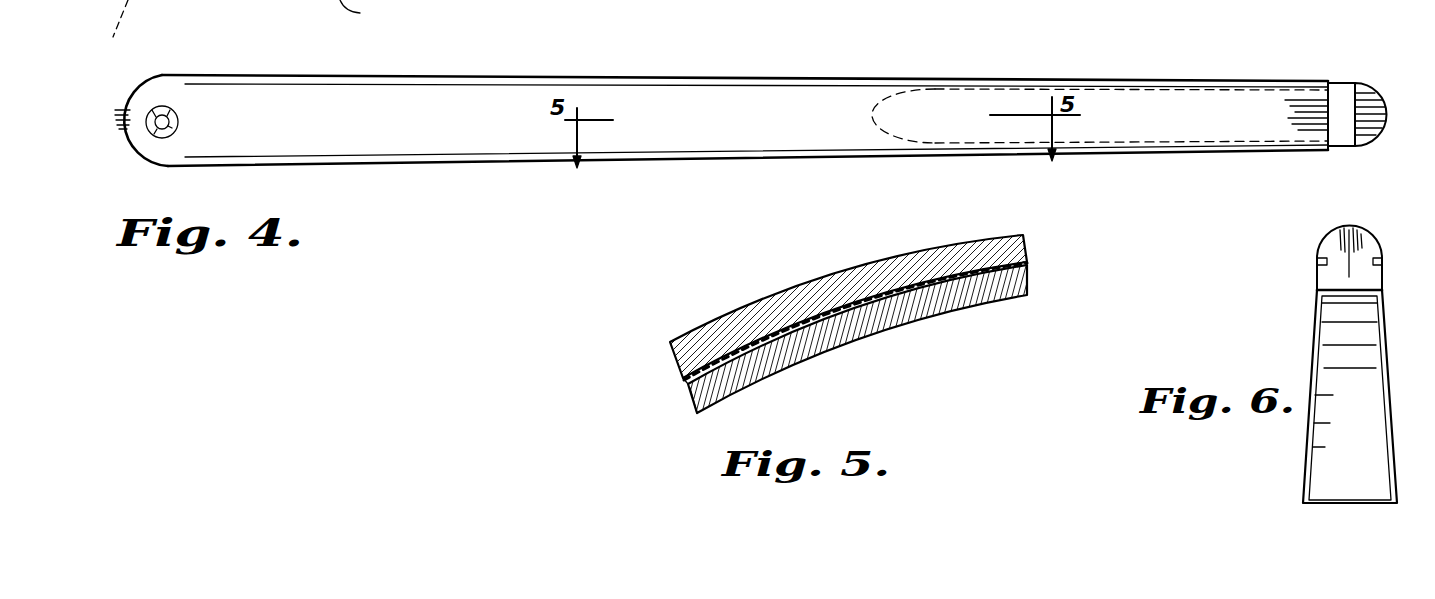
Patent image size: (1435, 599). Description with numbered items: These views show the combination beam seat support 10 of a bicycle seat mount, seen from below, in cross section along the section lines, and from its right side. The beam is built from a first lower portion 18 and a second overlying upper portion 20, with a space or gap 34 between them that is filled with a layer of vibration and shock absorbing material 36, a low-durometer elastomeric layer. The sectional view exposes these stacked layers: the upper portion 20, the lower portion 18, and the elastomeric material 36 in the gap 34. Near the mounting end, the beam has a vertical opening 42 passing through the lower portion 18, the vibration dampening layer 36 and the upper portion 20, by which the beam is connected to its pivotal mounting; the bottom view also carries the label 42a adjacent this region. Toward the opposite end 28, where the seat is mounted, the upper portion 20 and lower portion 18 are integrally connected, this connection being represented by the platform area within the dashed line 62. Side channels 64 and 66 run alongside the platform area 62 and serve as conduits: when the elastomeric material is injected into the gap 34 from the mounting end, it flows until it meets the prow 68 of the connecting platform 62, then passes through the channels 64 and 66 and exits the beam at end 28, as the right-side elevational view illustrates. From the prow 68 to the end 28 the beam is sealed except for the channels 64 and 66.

In FIG. 5, the combination beam seat support 10 is at (854, 327).
In FIG. 4, the first lower portion 18 is at (476, 148).
In FIG. 5, the first lower portion 18 is at (955, 303).
In FIG. 6, the first lower portion 18 is at (1380, 367).
In FIG. 5, the second overlying upper portion 20 is at (958, 243).
In FIG. 4, the end 28 is at (1313, 81).
In FIG. 6, the end 28 is at (1363, 228).
In FIG. 4, the gap 34 is at (59, 12).
In FIG. 5, the gap 34 is at (693, 396).
In FIG. 4, the vibration and shock absorbing material 36 is at (369, 16).
In FIG. 5, the vibration and shock absorbing material 36 is at (688, 385).
In FIG. 4, the vertical opening 42 is at (147, 128).
In FIG. 4, the slot 42a is at (105, 32).
In FIG. 4, the platform area 62 is at (973, 83).
In FIG. 5, the platform area 62 is at (1027, 264).
In FIG. 4, the side channel 64 is at (1108, 80).
In FIG. 6, the side channel 64 is at (1317, 262).
In FIG. 4, the side channel 66 is at (1353, 83).
In FIG. 6, the side channel 66 is at (1383, 262).
In FIG. 4, the prow 68 is at (878, 78).
In FIG. 5, the prow 68 is at (885, 296).